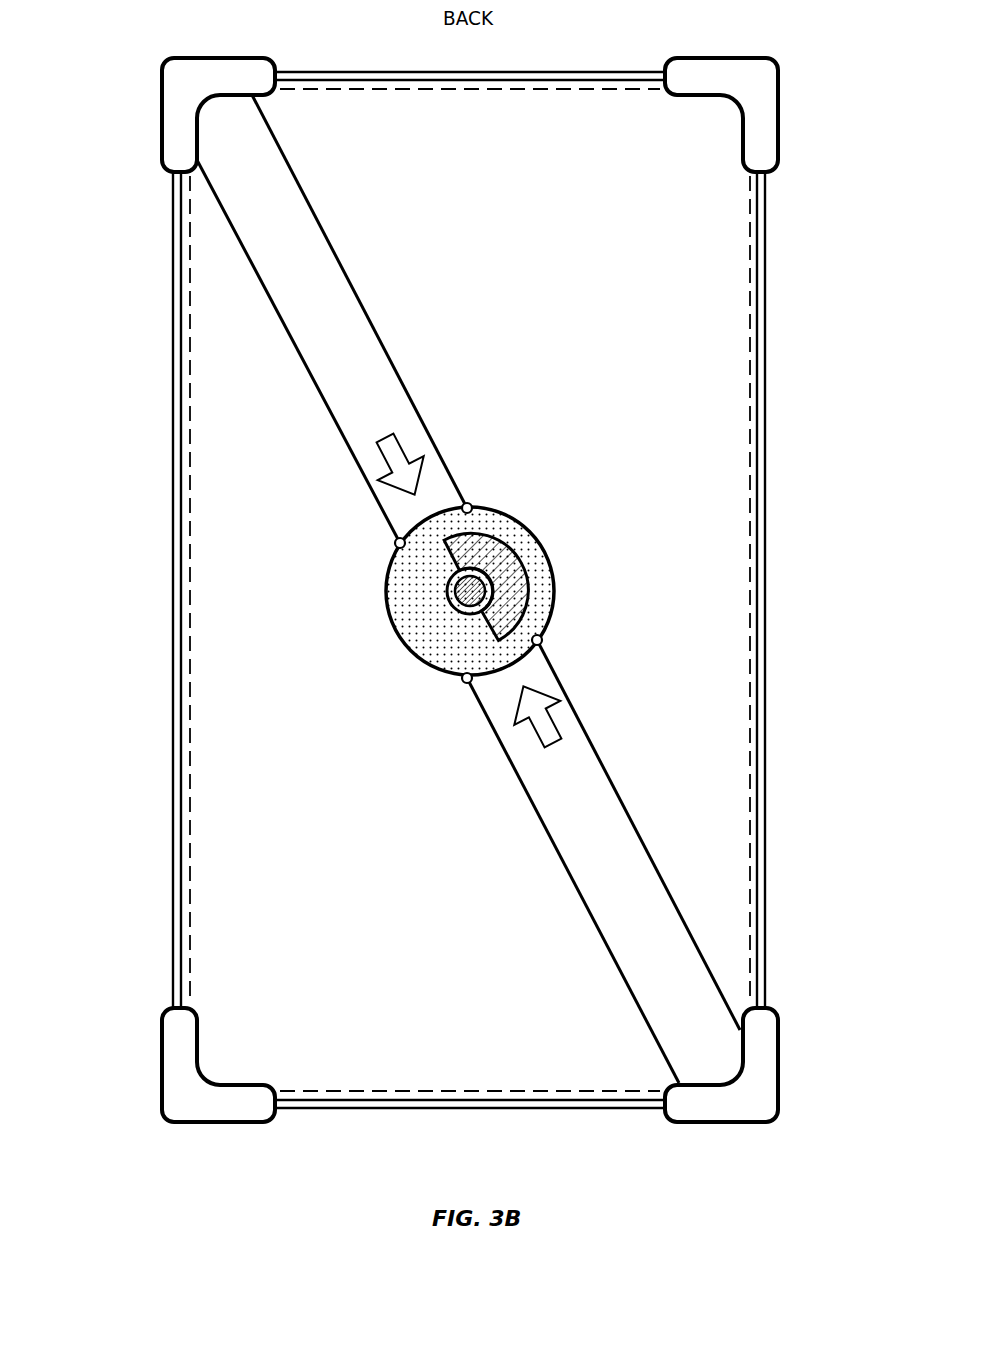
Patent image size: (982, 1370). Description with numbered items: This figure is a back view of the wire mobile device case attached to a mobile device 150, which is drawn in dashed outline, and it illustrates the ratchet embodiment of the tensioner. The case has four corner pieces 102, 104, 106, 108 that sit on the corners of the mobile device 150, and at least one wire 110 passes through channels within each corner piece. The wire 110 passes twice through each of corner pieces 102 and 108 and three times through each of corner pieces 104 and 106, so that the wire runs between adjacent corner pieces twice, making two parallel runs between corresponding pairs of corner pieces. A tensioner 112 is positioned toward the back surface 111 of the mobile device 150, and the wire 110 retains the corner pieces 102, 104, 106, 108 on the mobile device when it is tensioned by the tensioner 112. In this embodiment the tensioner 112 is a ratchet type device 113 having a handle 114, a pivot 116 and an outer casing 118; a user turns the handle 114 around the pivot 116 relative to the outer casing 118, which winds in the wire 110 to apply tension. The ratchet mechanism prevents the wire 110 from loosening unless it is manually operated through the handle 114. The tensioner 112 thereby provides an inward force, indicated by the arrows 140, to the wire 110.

The corner piece 102 is at (747, 90).
The corner piece 104 is at (190, 89).
The corner piece 106 is at (767, 1062).
The corner piece 108 is at (190, 1092).
The wire 110 is at (343, 72).
The back surface 111 is at (284, 806).
The tensioner 112 is at (462, 629).
The ratchet type device 113 is at (410, 612).
The handle 114 is at (453, 558).
The pivot 116 is at (453, 596).
The outer casing 118 is at (440, 645).
The arrows 140 is at (550, 683).
The mobile device 150 is at (325, 1068).